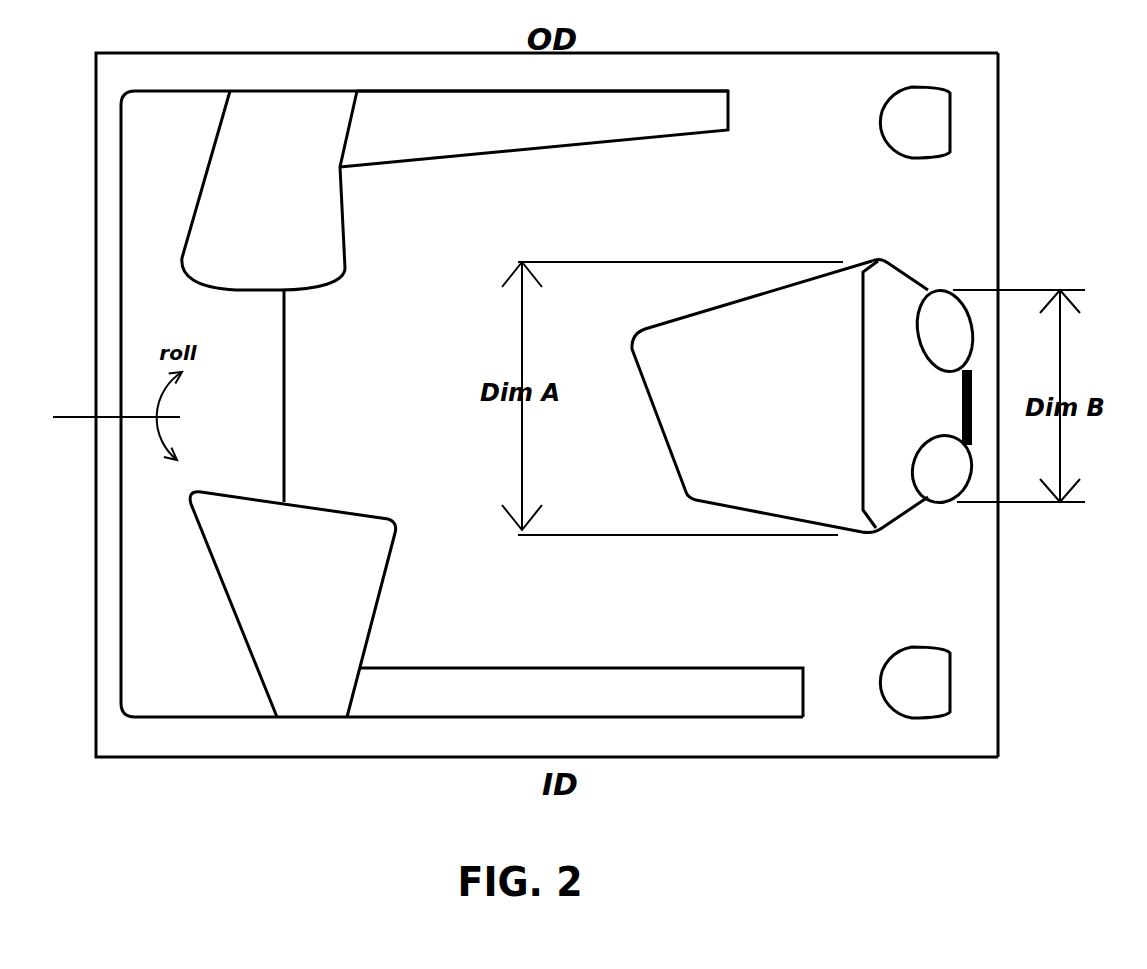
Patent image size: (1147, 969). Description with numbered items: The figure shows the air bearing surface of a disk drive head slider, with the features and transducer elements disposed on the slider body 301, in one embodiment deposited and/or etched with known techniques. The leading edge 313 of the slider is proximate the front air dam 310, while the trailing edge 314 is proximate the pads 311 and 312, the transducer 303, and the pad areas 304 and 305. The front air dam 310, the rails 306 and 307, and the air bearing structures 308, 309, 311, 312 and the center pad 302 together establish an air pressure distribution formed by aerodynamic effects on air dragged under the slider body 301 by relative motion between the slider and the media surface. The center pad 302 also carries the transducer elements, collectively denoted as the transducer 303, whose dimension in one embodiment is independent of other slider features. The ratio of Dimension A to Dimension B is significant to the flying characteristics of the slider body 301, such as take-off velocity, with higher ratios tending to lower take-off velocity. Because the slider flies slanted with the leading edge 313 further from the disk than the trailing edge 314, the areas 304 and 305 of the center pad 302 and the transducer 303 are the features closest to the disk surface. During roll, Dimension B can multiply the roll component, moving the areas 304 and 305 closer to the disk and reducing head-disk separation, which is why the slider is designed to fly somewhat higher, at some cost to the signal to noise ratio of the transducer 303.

The slider body 301 is at (317, 758).
The center pad 302 is at (748, 410).
The transducer 303 is at (977, 393).
The pad area 304 is at (926, 344).
The pad area 305 is at (923, 479).
The rail 306 is at (569, 702).
The rail 307 is at (518, 130).
The air bearing structure 308 is at (283, 619).
The air bearing structure 309 is at (260, 199).
The front air dam 310 is at (232, 402).
The pad 311 is at (891, 134).
The pad 312 is at (890, 694).
The leading edge 313 is at (83, 427).
The trailing edge 314 is at (1003, 222).